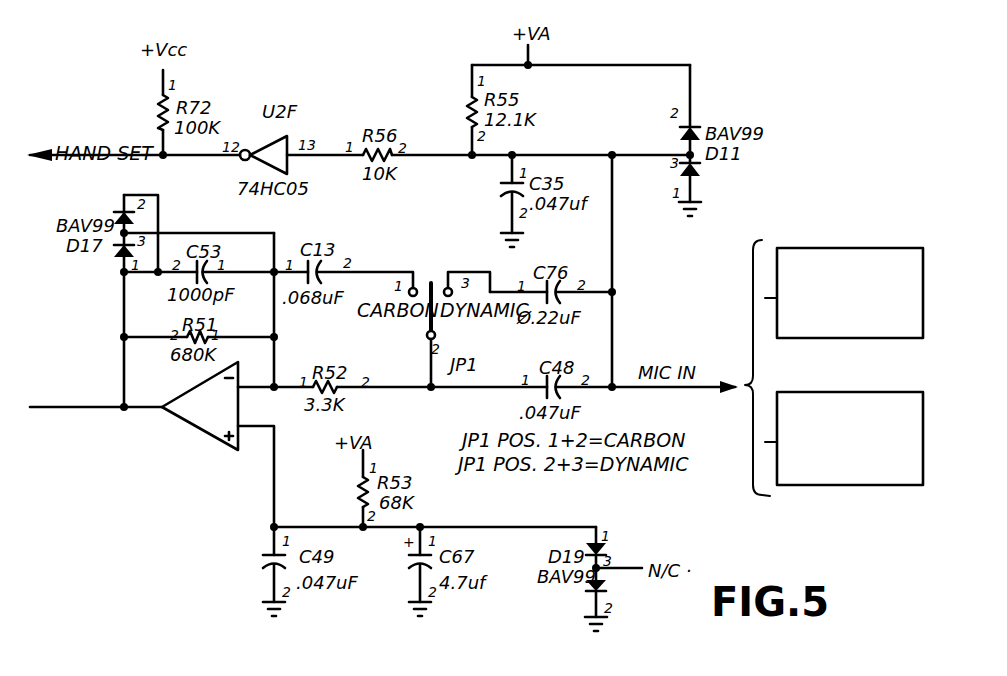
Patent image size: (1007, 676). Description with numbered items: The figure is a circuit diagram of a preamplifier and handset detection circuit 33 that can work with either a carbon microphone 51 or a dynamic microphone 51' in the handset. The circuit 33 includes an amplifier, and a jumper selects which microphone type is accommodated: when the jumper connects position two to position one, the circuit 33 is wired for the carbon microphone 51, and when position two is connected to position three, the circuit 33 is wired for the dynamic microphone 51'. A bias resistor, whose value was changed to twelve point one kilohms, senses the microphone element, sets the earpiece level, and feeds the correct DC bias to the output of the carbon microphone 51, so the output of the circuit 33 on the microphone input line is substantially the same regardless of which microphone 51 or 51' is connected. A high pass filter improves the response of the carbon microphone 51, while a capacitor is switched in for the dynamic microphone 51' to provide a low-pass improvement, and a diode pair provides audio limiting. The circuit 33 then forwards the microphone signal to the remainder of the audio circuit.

The preamplifier and handset detection circuit 33 is at (196, 481).
The carbon microphone 51 is at (844, 274).
The dynamic microphone 51' is at (844, 422).